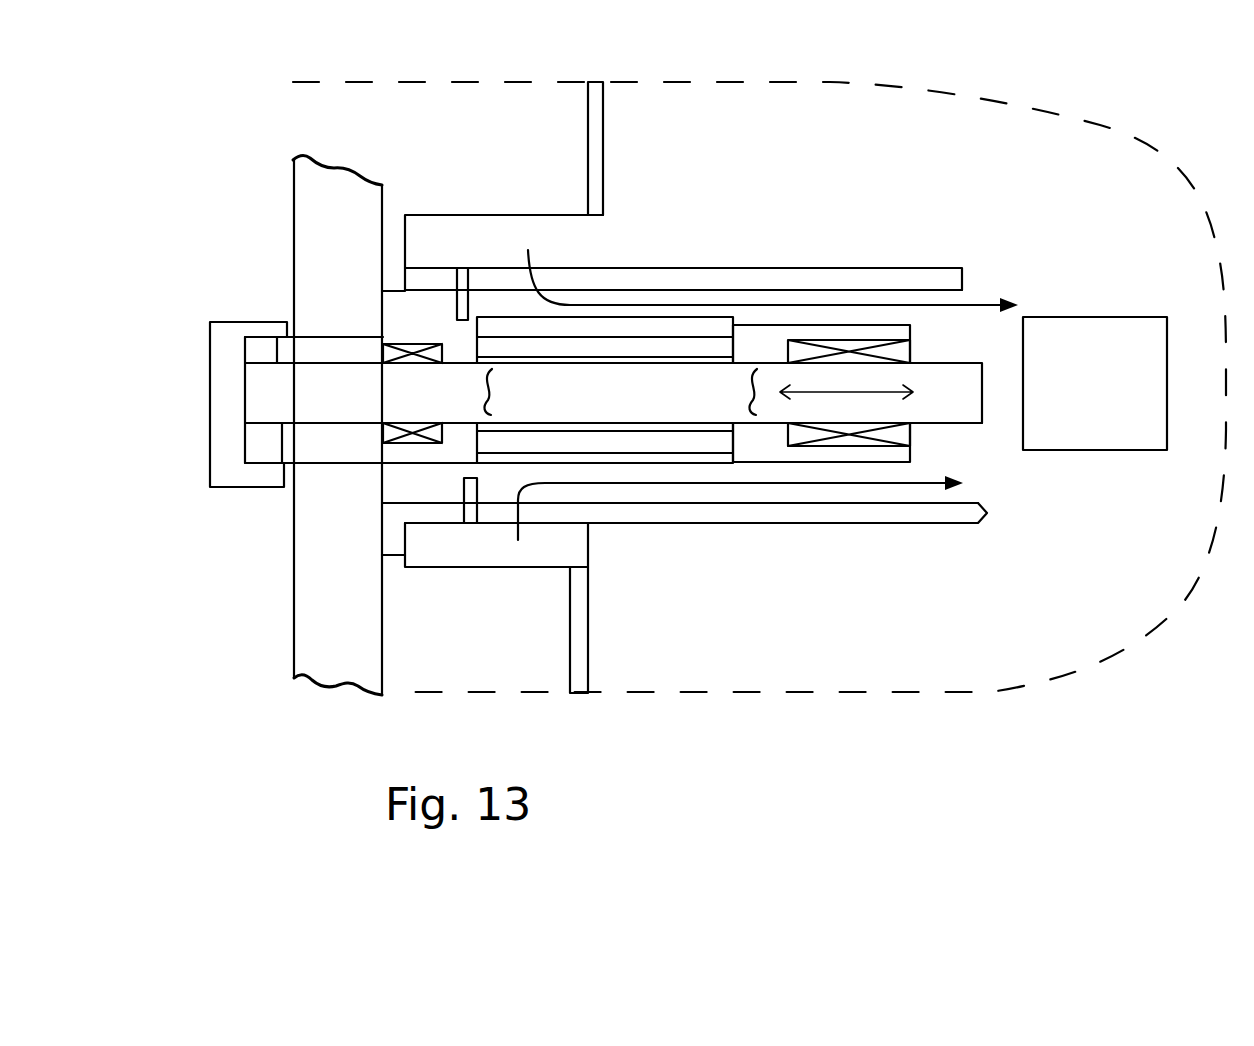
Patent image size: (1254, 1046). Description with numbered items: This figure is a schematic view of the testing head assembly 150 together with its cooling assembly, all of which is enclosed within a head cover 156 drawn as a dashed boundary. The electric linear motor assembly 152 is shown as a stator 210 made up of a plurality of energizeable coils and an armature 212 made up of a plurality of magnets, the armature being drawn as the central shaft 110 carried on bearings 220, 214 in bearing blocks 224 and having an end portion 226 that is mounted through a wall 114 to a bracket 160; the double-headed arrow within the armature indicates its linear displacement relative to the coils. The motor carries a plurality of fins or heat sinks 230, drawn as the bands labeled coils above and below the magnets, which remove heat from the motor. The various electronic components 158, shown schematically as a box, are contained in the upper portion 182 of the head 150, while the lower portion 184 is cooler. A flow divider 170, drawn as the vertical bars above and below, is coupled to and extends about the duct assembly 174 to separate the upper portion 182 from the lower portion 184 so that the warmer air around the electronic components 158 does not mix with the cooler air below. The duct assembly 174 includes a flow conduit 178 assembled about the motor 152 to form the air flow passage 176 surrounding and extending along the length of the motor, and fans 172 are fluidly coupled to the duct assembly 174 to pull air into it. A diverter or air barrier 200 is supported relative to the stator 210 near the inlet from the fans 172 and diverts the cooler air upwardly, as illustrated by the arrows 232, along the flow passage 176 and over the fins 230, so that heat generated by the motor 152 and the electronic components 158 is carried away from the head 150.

The shaft 110 is at (652, 393).
The wall 114 is at (326, 186).
The head assembly 150 is at (933, 587).
The linear motor assembly 152 is at (698, 324).
The head cover 156 is at (995, 688).
The electronic components 158 is at (1093, 316).
The mounting bracket 160 is at (227, 345).
The flow divider 170 is at (603, 130).
The fans 172 is at (500, 262).
The duct assembly 174 is at (647, 512).
The flow passage 176 is at (856, 299).
The flow conduit 178 is at (690, 278).
The upper portion 182 is at (906, 148).
The lower portion 184 is at (499, 116).
The air barrier 200 is at (452, 283).
The stator 210 is at (648, 336).
The armature 212 is at (732, 408).
The right bearing 214 is at (910, 347).
The bearing 220 is at (407, 347).
The bearing block 224 is at (821, 393).
The shaft end portion 226 is at (361, 399).
The fins 230 is at (497, 316).
The arrows 232 is at (898, 303).